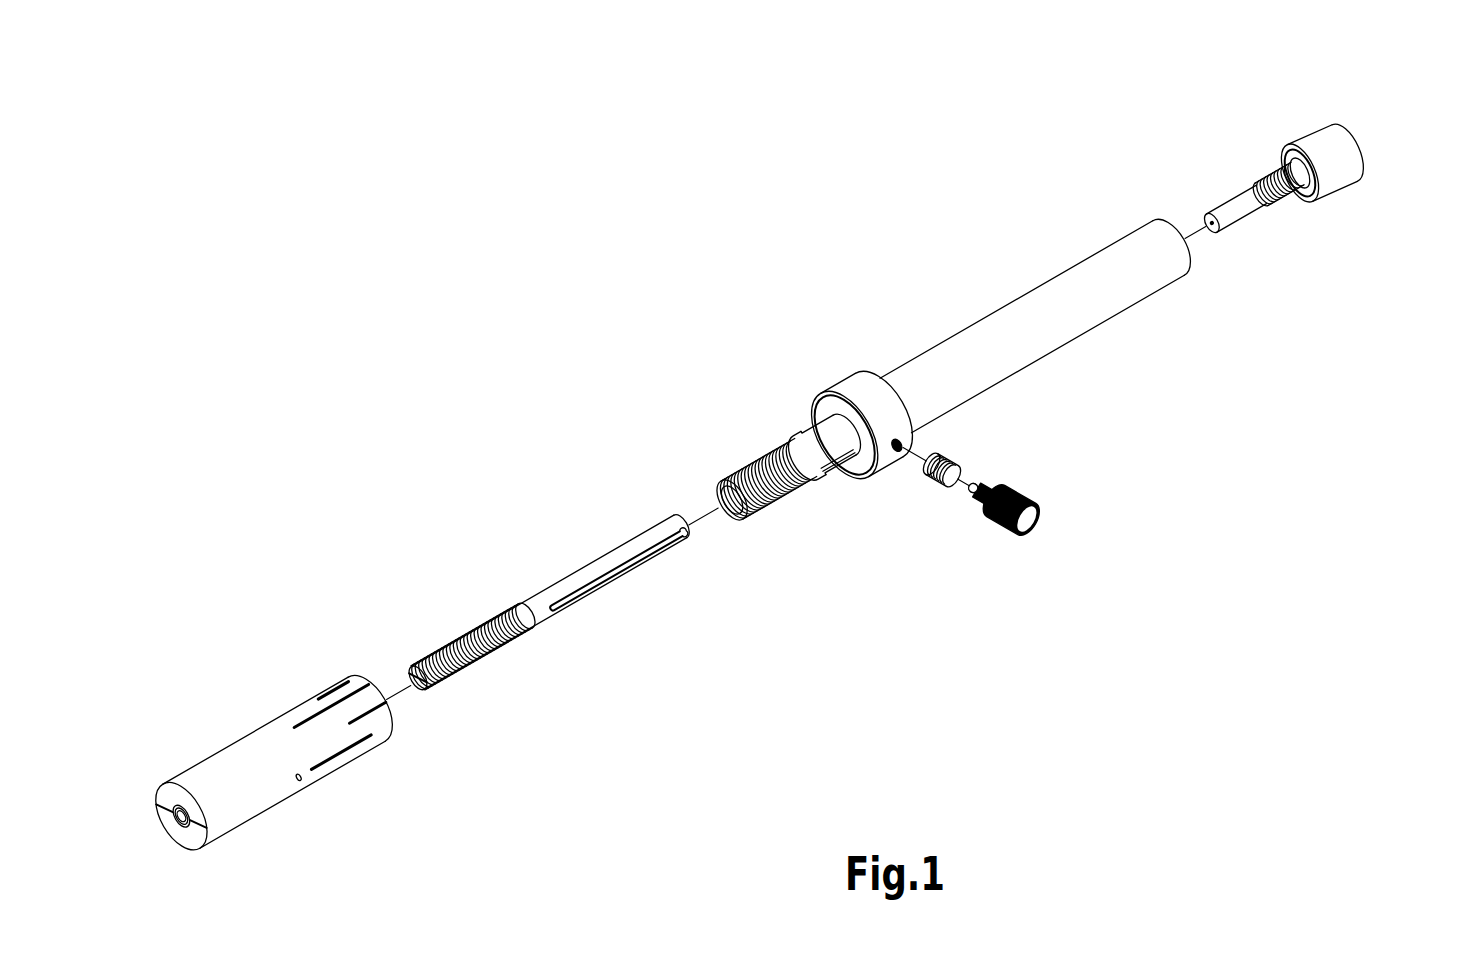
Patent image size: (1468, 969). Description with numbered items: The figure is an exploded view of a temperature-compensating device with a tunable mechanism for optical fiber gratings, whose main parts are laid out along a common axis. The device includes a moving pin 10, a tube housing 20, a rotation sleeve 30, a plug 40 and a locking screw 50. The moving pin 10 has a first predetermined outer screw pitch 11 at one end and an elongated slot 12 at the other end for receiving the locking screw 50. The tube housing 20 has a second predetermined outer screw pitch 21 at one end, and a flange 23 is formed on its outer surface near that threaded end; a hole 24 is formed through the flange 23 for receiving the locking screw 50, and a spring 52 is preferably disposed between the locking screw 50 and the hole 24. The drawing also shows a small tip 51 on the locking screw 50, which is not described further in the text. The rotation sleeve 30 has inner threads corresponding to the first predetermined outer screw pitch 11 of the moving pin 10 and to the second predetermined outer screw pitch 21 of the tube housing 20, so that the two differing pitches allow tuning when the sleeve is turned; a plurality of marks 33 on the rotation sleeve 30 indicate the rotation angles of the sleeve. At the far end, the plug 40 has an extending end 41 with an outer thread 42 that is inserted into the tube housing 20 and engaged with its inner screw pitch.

The moving pin 10 is at (566, 596).
The first predetermined outer screw pitch 11 is at (475, 634).
The elongated slot 12 is at (632, 577).
The tube housing 20 is at (1028, 327).
The second predetermined outer screw pitch 21 is at (767, 453).
The flange 23 is at (862, 388).
The hole 24 is at (900, 448).
The rotation sleeve 30 is at (237, 762).
The marks 33 is at (372, 738).
The plug 40 is at (1343, 155).
The extending end 41 is at (1239, 193).
The outer thread 42 is at (1279, 190).
The locking screw 50 is at (1003, 527).
The knob tip 51 is at (1003, 490).
The spring 52 is at (958, 470).